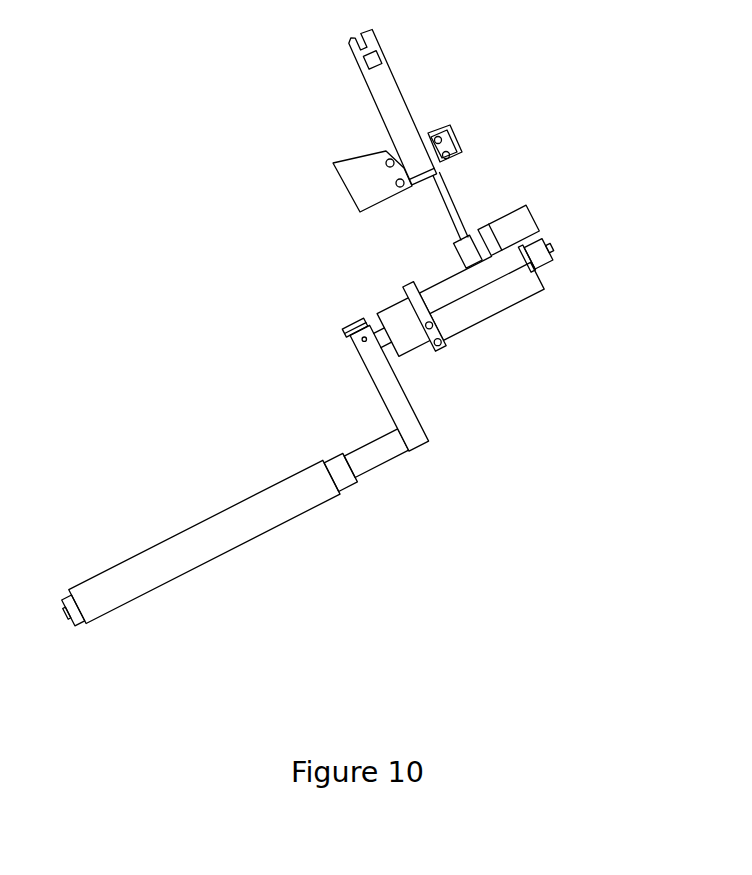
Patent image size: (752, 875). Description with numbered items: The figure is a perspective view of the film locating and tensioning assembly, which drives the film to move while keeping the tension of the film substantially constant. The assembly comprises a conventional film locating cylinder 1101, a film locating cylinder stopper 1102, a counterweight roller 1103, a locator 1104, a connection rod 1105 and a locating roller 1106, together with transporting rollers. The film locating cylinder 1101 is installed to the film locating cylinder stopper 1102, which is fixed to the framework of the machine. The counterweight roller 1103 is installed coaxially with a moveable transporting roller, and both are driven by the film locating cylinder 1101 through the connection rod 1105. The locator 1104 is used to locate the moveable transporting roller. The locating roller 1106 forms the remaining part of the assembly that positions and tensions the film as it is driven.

The film locating cylinder 1101 is at (427, 109).
The film locating cylinder stopper 1102 is at (504, 158).
The counterweight roller 1103 is at (511, 264).
The locator 1104 is at (587, 264).
The connection rod 1105 is at (440, 384).
The locating roller 1106 is at (242, 527).